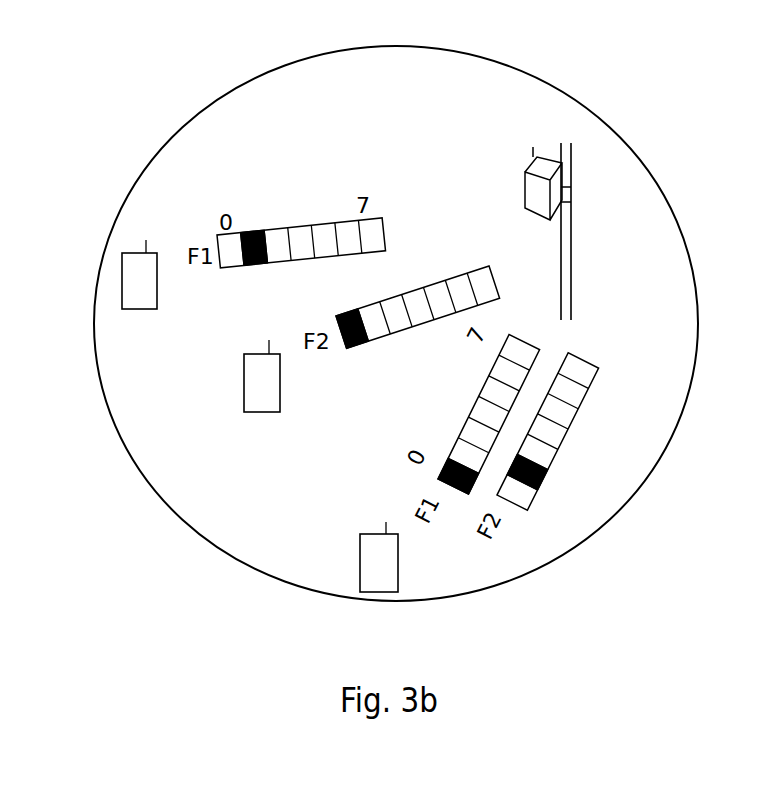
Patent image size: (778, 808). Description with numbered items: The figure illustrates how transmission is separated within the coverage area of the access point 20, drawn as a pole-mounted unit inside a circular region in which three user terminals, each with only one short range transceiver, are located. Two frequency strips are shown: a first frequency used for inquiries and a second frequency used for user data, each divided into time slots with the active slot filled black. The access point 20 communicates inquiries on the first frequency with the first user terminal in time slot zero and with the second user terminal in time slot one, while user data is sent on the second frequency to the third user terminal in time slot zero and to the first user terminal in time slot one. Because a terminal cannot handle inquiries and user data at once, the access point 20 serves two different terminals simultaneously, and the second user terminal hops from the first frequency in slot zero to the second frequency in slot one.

The access point 20 is at (545, 175).